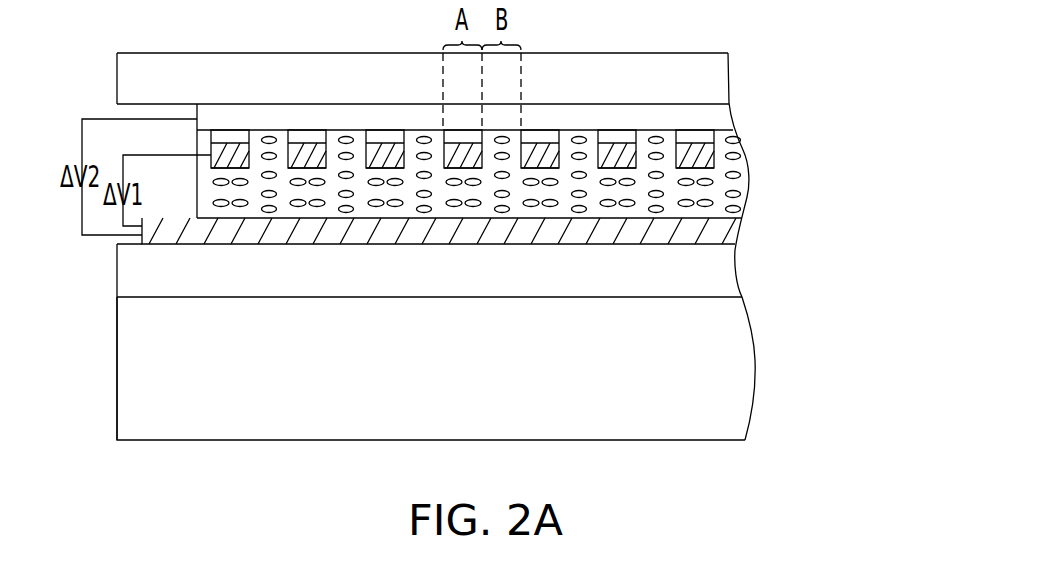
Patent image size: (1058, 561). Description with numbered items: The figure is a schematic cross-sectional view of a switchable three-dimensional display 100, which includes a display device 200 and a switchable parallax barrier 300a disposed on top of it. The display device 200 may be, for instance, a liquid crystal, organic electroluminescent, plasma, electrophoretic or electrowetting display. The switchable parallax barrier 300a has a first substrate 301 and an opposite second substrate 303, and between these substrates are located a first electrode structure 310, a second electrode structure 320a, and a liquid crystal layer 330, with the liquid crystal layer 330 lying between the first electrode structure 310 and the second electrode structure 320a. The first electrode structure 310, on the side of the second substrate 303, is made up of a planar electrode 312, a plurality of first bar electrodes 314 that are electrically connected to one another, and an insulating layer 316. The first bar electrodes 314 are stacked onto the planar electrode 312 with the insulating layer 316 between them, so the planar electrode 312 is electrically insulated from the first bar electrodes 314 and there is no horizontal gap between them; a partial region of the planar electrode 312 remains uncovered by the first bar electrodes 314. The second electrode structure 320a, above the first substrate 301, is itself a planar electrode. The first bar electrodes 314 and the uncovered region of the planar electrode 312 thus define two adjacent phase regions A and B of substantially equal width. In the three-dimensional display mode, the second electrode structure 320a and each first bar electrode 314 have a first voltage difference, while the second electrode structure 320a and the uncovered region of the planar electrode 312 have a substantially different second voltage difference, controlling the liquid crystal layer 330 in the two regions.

The switchable 3D display 100 is at (696, 471).
The display device 200 is at (743, 377).
The switchable parallax barrier 300a is at (862, 72).
The first substrate 301 is at (722, 265).
The second substrate 303 is at (717, 68).
The first electrode structure 310 is at (808, 103).
The planar electrode 312 is at (720, 118).
The first bar electrodes 314 is at (722, 157).
The insulating layer 316 is at (718, 140).
The second electrode structure 320a is at (728, 232).
The liquid crystal layer 330 is at (720, 195).